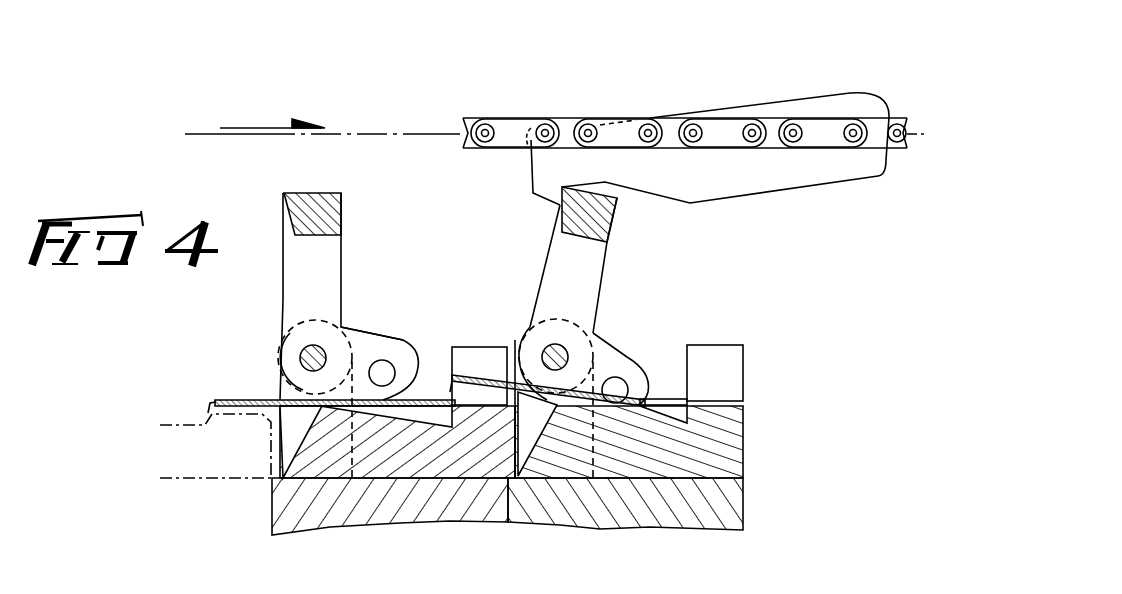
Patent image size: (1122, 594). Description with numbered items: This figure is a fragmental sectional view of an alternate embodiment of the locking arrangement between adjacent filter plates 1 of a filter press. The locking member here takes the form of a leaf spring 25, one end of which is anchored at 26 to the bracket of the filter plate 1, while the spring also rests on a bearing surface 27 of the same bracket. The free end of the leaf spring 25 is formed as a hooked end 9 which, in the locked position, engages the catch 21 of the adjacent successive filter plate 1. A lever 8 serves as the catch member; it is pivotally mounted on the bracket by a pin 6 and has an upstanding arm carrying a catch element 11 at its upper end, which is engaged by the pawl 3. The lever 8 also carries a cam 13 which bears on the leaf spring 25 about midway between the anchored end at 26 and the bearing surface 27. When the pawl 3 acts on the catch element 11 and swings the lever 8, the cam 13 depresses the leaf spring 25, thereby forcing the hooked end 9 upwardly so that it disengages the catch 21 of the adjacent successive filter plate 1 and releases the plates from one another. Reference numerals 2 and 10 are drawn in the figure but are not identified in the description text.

The filter plate 1 is at (272, 517).
The chain 2 is at (530, 114).
The pawl 3 is at (778, 190).
The pin 6 is at (307, 350).
The catch member 8 is at (342, 264).
The hooked end 9 is at (212, 404).
The direction of travel arrow 10 is at (252, 126).
The catch element 11 is at (343, 211).
The cam 13 is at (381, 360).
The catch 21 is at (443, 401).
The leaf spring 25 is at (226, 400).
The anchored end 26 is at (701, 400).
The bearing surface 27 is at (323, 397).